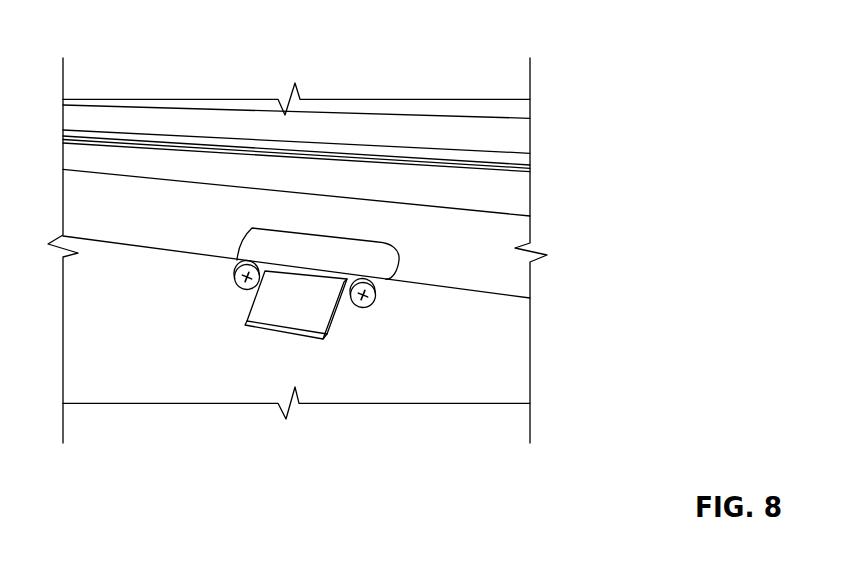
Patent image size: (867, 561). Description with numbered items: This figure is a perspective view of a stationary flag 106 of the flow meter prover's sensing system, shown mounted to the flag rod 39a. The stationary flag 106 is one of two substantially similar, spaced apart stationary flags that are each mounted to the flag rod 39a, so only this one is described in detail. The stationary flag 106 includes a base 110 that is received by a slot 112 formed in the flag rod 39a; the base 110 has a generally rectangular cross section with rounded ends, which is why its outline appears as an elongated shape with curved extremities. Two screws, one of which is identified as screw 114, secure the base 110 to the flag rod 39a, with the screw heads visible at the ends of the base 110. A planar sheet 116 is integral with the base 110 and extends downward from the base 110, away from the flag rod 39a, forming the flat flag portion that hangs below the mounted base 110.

The flag rod 39a is at (475, 232).
The stationary flag 106 is at (281, 290).
The base 110 is at (340, 258).
The slot 112 is at (283, 240).
The screw 114 is at (241, 289).
The planar sheet 116 is at (322, 316).